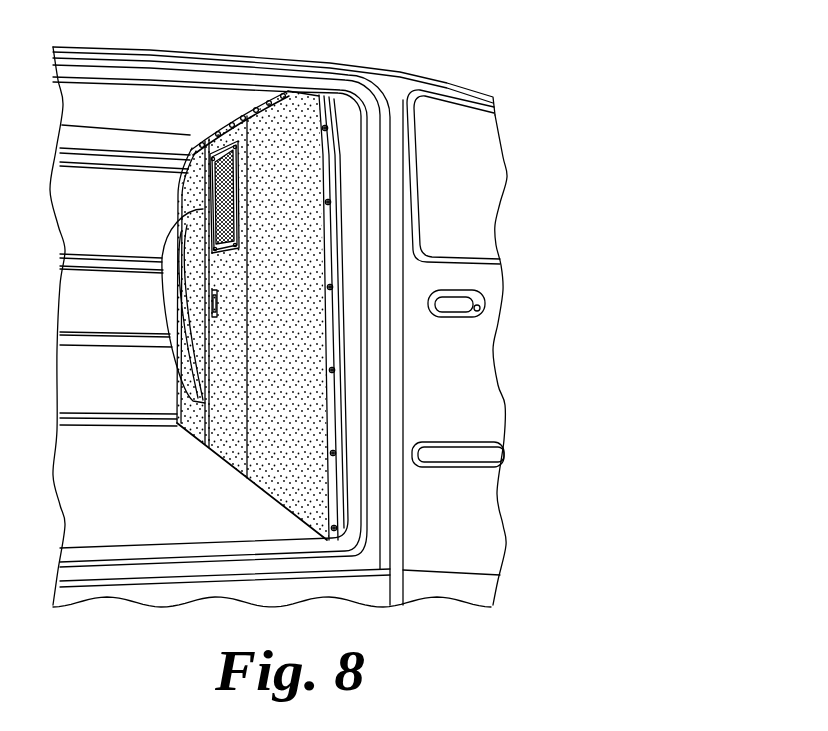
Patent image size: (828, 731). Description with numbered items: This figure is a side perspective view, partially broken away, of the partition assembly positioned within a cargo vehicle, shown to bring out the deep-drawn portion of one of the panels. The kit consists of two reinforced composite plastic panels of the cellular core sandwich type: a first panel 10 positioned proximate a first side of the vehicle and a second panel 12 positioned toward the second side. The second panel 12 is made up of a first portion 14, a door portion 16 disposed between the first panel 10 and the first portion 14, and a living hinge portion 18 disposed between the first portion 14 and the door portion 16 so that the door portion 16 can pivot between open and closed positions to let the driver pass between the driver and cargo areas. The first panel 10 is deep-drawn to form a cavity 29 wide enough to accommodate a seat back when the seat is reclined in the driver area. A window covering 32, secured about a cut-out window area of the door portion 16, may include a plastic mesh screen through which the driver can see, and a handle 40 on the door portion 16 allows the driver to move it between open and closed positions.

The first panel 10 is at (192, 148).
The second panel 12 is at (318, 108).
The first portion 14 is at (322, 183).
The door portion 16 is at (233, 117).
The living hinge portion 18 is at (246, 374).
The cavity 29 is at (177, 355).
The window covering 32 is at (243, 177).
The handle 40 is at (212, 305).